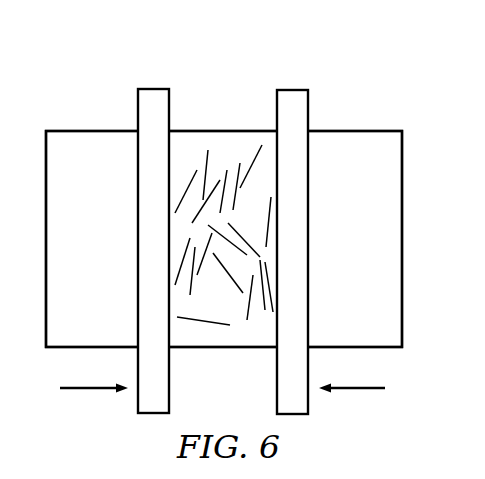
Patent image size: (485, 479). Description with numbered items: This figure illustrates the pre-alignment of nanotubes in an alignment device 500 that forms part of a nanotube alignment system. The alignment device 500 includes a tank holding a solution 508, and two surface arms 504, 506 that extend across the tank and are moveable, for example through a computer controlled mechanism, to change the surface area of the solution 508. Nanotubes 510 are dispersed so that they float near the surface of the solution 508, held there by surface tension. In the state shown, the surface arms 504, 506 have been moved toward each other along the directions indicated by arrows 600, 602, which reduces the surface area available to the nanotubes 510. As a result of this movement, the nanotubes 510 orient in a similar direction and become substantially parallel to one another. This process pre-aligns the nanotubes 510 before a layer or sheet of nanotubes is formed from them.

The alignment device 500 is at (250, 69).
The surface arm 504 is at (138, 113).
The surface arm 506 is at (308, 113).
The solution 508 is at (335, 252).
The nanotubes 510 is at (250, 306).
The arrow 600 is at (85, 391).
The arrow 602 is at (360, 390).